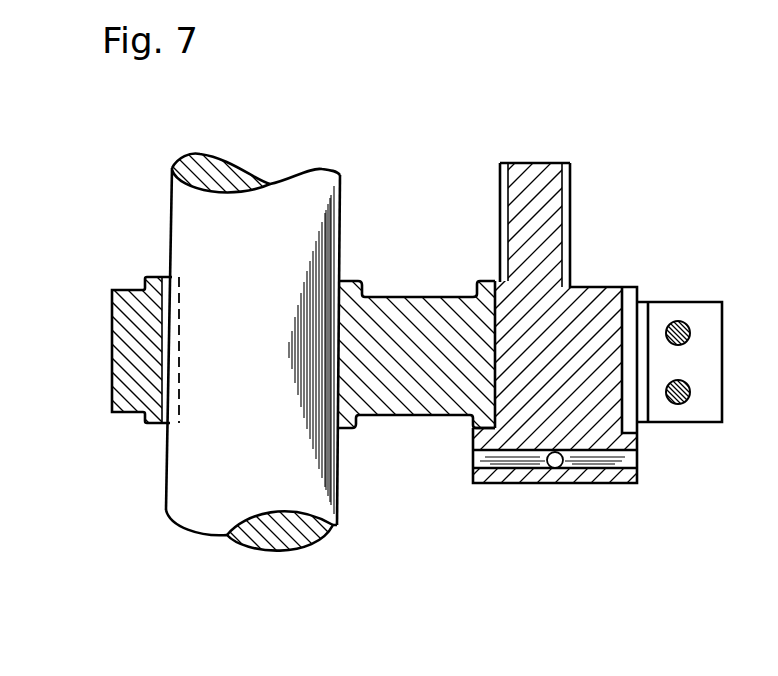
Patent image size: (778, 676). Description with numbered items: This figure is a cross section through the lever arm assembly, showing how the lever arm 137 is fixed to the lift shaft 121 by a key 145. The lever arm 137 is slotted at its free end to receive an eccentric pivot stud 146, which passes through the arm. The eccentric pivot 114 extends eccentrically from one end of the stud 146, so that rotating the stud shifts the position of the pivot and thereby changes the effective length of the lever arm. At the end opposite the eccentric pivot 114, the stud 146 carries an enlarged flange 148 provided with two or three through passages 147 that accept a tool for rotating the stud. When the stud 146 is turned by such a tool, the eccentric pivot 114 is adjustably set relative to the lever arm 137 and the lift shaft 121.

The lift shaft 121 is at (200, 207).
The key 145 is at (165, 323).
The lever arm 137 is at (413, 320).
The eccentric pivot 114 is at (537, 182).
The eccentric pivot stud 146 is at (613, 297).
The enlarged flange 148 is at (475, 445).
The through passages 147 is at (553, 478).